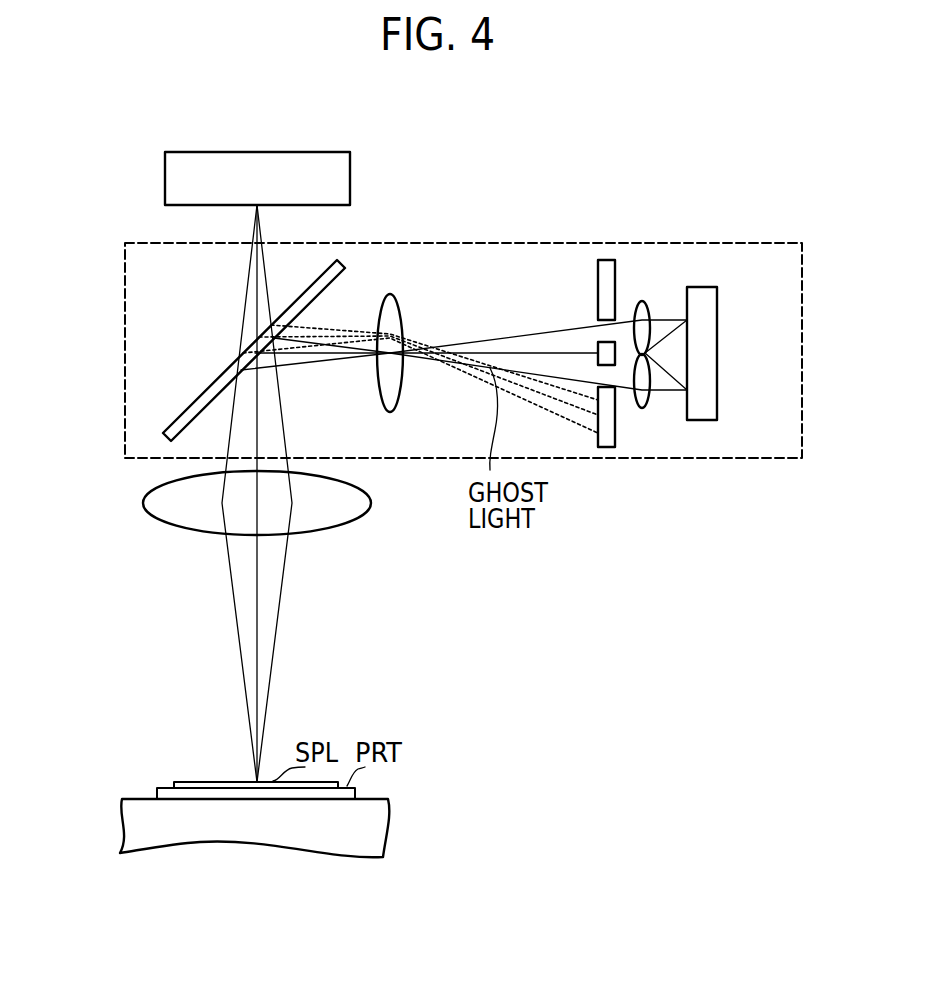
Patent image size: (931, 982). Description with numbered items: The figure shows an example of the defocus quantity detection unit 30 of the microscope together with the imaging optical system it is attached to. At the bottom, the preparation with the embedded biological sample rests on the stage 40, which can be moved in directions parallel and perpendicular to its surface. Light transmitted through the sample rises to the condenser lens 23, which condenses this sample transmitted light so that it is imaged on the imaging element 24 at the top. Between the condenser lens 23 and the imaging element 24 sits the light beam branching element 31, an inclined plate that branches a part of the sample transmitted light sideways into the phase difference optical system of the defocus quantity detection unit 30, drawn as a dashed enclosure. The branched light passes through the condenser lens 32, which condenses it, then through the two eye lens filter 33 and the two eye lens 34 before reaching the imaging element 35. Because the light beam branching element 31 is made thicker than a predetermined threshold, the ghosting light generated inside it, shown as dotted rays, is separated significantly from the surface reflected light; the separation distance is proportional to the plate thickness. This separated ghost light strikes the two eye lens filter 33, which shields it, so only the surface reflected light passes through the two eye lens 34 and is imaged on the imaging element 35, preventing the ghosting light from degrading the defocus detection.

The condenser lens 23 is at (143, 503).
The imaging element 24 is at (283, 151).
The defocus quantity detection unit 30 is at (672, 243).
The light beam branching element 31 is at (189, 407).
The condenser lens 32 is at (390, 294).
The two eye lens filter 33 is at (598, 440).
The two eye lens 34 is at (641, 301).
The imaging element 35 is at (717, 352).
The stage 40 is at (393, 828).